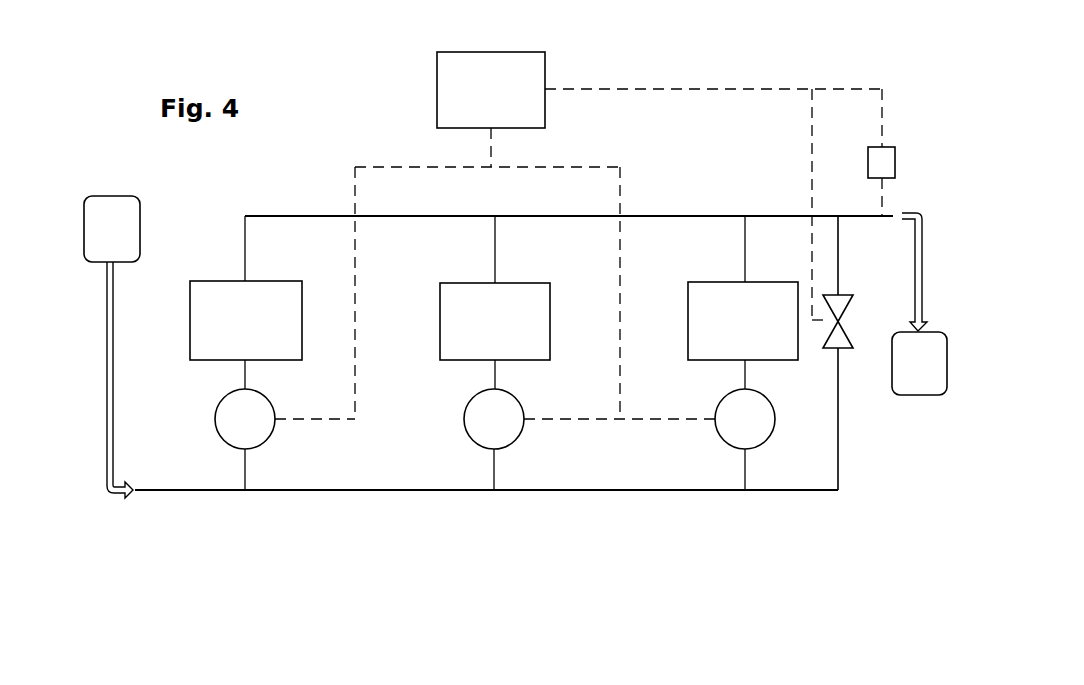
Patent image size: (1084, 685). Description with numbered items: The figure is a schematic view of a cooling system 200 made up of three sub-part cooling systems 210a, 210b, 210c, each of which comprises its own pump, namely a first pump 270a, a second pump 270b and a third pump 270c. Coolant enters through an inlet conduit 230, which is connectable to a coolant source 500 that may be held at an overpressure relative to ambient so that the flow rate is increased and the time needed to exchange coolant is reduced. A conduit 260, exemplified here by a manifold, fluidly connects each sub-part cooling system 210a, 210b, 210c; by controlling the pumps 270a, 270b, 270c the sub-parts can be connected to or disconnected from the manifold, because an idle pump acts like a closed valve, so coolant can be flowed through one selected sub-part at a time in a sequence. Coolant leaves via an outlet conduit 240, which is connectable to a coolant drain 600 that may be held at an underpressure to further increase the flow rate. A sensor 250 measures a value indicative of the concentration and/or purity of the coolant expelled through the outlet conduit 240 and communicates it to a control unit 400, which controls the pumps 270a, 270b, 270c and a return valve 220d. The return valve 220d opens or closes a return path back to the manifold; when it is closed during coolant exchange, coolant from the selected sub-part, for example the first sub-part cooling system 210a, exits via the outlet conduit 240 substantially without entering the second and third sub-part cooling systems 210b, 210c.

The cooling system 200 is at (325, 51).
The control unit 400 is at (578, 235).
The sensor 250 is at (863, 163).
The outlet conduit 240 is at (856, 215).
The coolant source 500 is at (112, 229).
The coolant drain 600 is at (919, 304).
The first sub-part cooling system 210a is at (246, 302).
The second sub-part cooling system 210b is at (495, 302).
The third sub-part cooling system 210c is at (743, 302).
The first pump 270a is at (252, 428).
The second pump 270b is at (502, 428).
The third pump 270c is at (752, 432).
The return valve 220d is at (852, 345).
The conduit 260 is at (473, 494).
The inlet conduit 230 is at (159, 492).